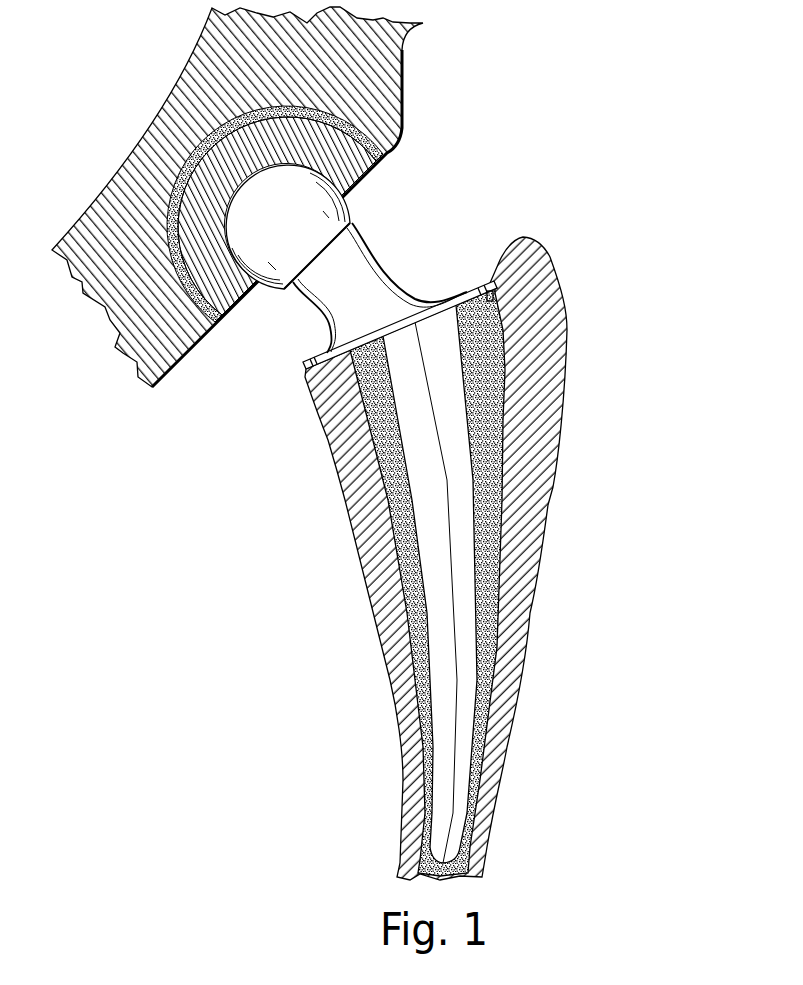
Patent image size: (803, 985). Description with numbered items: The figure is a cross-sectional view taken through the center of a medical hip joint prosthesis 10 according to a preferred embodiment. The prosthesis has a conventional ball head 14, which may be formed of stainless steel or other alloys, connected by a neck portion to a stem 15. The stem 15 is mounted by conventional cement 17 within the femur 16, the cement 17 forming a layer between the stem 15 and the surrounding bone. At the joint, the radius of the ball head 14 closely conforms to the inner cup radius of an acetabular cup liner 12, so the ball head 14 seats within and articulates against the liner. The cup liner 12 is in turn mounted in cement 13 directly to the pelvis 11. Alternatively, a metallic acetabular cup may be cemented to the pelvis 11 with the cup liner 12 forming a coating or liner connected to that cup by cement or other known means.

The hip joint prosthesis 10 is at (446, 490).
The pelvis 11 is at (380, 96).
The acetabular cup liner 12 is at (368, 175).
The cement 13 is at (397, 150).
The ball head 14 is at (355, 224).
The stem 15 is at (440, 612).
The femur 16 is at (548, 506).
The cement 17 is at (412, 623).